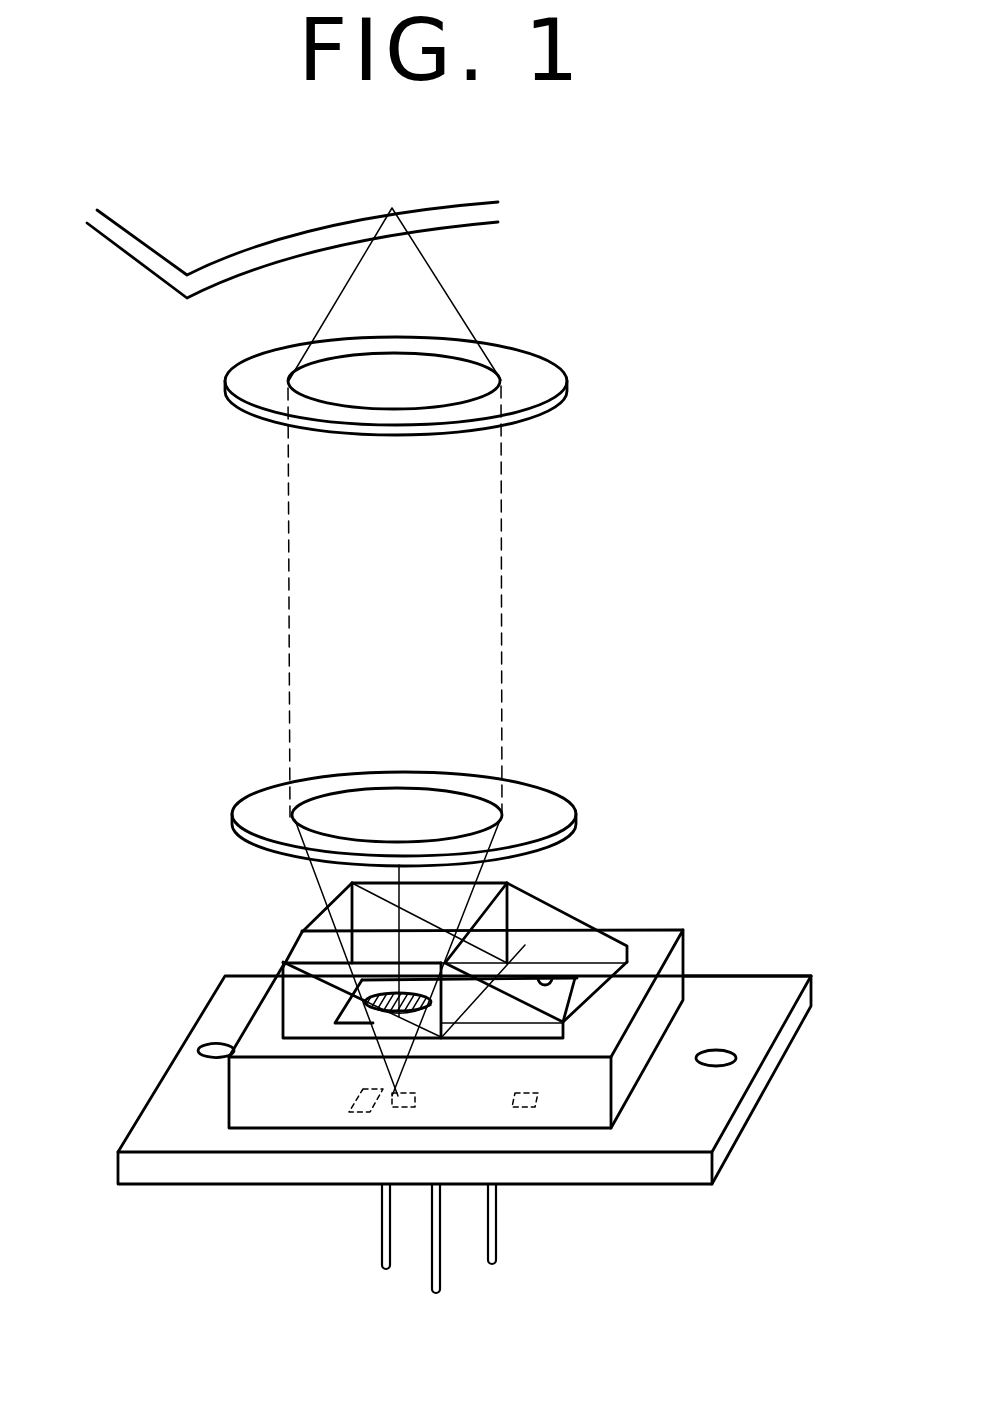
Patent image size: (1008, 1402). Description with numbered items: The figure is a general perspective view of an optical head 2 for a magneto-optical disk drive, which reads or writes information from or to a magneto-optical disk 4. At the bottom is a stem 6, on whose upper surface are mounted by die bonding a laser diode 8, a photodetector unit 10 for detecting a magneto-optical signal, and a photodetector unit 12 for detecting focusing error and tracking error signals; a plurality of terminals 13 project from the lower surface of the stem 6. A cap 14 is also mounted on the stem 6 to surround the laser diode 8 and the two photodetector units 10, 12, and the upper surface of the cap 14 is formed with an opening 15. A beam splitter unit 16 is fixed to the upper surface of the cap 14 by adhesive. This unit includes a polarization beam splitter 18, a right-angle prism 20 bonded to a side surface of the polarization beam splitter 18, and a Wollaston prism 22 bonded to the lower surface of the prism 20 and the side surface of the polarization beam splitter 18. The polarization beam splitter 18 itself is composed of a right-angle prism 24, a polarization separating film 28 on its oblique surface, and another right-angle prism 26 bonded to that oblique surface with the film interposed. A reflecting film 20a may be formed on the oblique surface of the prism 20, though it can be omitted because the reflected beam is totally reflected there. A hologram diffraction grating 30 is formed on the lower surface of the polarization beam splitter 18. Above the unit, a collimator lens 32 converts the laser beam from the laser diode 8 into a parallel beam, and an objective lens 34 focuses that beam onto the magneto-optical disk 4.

The optical head 2 is at (538, 752).
The magneto-optical disk 4 is at (177, 248).
The stem 6 is at (722, 1098).
The laser diode 8 is at (400, 1112).
The photodetector unit 10 is at (536, 1103).
The photodetector unit 12 is at (347, 1112).
The terminals 13 is at (440, 1242).
The cap 14 is at (662, 948).
The opening 15 is at (563, 970).
The beam splitter unit 16 is at (313, 905).
The polarization beam splitter 18 is at (313, 922).
The right-angle prism 20 is at (565, 895).
The reflecting film 20a is at (533, 903).
The Wollaston prism 22 is at (595, 990).
The right-angle prism 24 is at (297, 1008).
The right-angle prism 26 is at (427, 892).
The polarization separating film 28 is at (283, 968).
The hologram diffraction grating 30 is at (376, 999).
The collimator lens 32 is at (270, 797).
The objective lens 34 is at (553, 370).